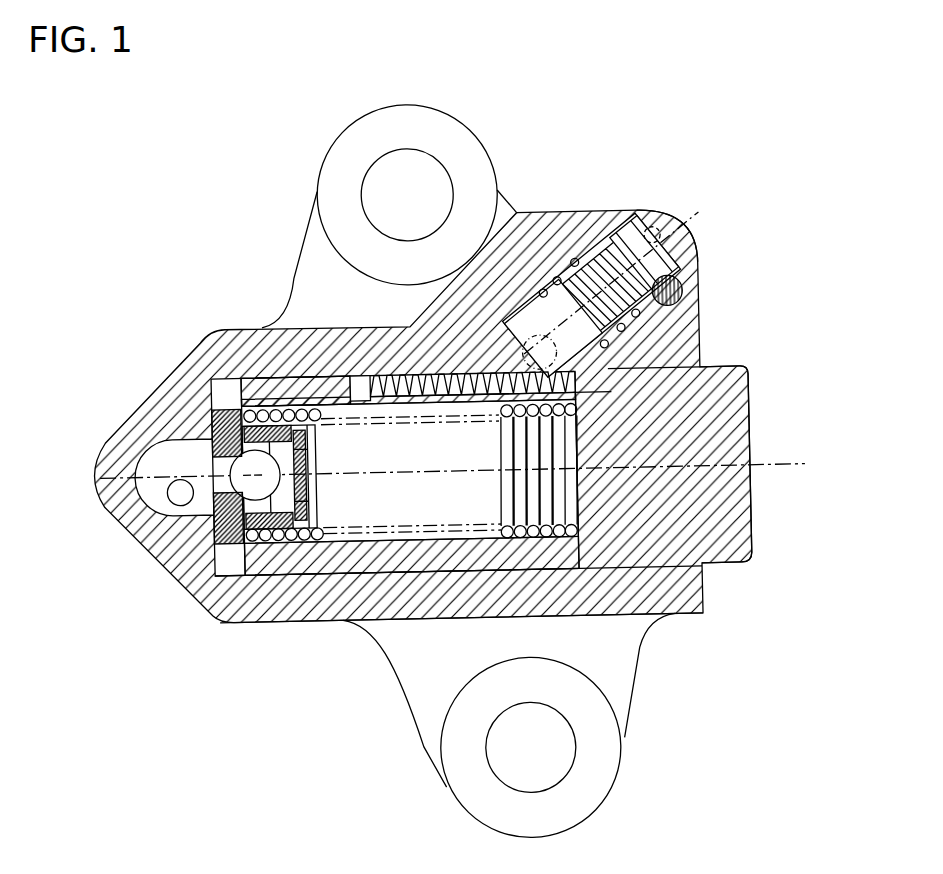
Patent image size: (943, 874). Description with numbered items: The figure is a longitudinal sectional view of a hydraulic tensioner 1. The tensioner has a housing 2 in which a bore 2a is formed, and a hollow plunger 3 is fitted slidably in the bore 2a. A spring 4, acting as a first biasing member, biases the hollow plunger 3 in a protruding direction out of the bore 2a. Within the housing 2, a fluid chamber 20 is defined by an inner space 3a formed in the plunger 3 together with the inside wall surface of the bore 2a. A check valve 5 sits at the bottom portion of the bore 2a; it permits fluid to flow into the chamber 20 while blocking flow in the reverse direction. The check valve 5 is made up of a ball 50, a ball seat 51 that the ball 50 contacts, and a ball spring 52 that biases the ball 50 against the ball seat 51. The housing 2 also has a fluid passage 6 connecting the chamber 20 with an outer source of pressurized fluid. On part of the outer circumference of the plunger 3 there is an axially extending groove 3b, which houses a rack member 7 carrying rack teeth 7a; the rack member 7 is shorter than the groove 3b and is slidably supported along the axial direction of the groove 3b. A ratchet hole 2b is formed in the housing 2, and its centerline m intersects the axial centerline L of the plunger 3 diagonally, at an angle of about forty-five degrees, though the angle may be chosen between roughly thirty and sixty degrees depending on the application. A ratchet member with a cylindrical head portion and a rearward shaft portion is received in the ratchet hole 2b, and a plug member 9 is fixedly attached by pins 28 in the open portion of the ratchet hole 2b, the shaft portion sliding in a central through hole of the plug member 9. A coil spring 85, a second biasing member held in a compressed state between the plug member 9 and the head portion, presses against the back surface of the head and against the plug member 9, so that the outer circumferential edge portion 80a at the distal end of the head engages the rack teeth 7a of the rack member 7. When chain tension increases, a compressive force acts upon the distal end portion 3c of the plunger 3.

The hydraulic tensioner 1 is at (231, 238).
The housing 2 is at (414, 623).
The bore 2a is at (493, 572).
The ratchet hole 2b is at (697, 264).
The hollow plunger 3 is at (653, 584).
The inner space 3a is at (364, 587).
The groove 3b is at (355, 375).
The distal end portion 3c is at (751, 543).
The spring 4 is at (564, 541).
The check valve 5 is at (219, 397).
The fluid passage 6 is at (172, 483).
The rack member 7 is at (603, 403).
The rack teeth 7a is at (472, 377).
The plug member 9 is at (665, 243).
The fluid chamber 20 is at (384, 505).
The pins 28 is at (687, 295).
The ball 50 is at (253, 543).
The ball seat 51 is at (202, 572).
The ball spring 52 is at (299, 524).
The outer circumferential edge portion 80a is at (590, 405).
The coil spring 85 is at (574, 256).
The axial centerline of the plunger L is at (783, 468).